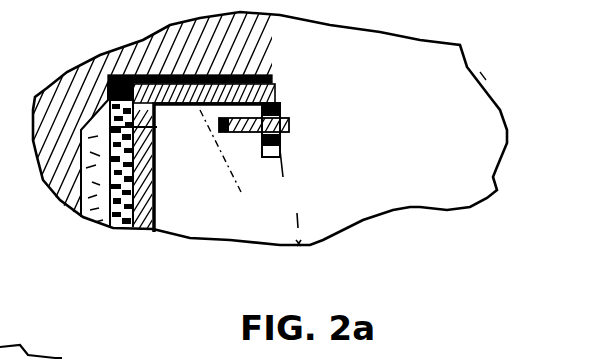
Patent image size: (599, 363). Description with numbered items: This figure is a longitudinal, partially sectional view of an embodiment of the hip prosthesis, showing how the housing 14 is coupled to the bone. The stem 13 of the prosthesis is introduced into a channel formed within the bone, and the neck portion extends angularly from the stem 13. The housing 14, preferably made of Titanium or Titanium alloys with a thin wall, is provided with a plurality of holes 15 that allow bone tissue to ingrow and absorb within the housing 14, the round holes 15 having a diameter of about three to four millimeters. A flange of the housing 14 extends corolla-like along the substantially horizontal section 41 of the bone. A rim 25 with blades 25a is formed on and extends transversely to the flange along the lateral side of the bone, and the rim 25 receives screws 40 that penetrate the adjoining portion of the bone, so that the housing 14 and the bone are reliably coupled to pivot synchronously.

The stem 13 is at (68, 177).
The housing 14 is at (158, 191).
The holes 15 is at (157, 153).
The rim 25 is at (277, 97).
The blades 25a is at (275, 135).
The screws 40 is at (280, 121).
The substantially horizontal section 41 is at (235, 168).